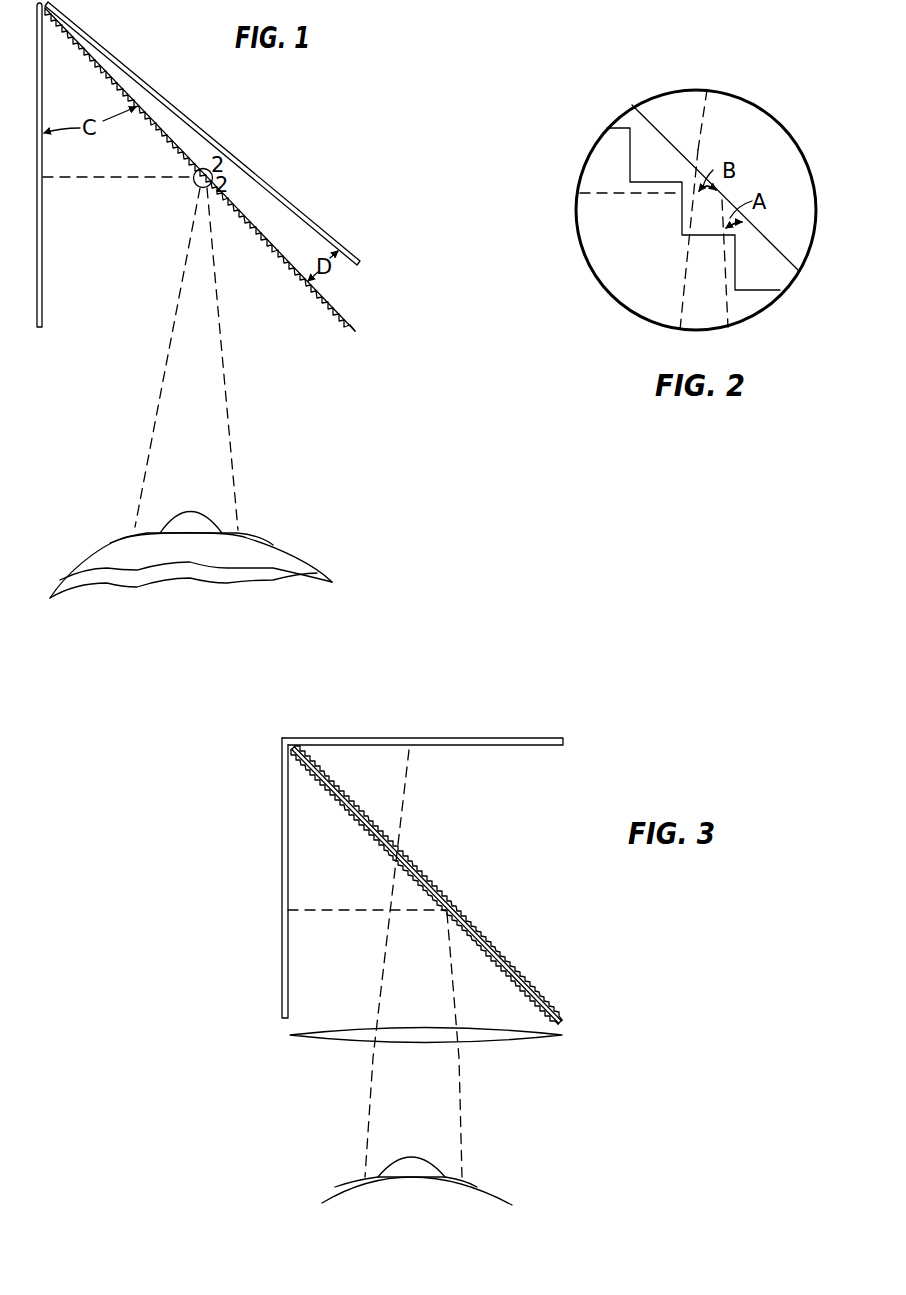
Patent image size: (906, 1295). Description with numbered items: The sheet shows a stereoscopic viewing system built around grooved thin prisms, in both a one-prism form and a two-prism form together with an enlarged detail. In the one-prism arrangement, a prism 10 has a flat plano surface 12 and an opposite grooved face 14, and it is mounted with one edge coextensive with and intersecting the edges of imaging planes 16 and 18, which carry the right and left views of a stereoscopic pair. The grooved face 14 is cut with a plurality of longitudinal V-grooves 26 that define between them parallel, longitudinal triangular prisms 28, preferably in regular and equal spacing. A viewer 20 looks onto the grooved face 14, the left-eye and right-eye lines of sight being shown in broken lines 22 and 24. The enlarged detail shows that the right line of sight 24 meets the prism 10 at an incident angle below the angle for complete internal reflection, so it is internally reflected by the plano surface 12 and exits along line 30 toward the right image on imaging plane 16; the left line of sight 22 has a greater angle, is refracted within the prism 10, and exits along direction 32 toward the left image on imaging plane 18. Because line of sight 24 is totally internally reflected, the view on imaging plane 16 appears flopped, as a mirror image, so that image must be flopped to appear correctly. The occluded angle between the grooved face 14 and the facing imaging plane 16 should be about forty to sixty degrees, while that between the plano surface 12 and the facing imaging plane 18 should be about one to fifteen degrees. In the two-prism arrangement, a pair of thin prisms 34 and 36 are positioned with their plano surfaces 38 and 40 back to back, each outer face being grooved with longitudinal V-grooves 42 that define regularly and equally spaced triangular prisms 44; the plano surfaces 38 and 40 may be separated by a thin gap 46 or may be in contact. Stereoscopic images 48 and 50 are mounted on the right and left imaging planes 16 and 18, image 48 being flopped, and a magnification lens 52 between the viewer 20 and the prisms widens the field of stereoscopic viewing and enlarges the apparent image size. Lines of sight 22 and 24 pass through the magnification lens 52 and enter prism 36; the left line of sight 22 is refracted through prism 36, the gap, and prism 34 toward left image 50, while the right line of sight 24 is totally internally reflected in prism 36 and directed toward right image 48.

In FIG. 1, the prism 10 is at (345, 322).
In FIG. 2, the prism 10 is at (770, 272).
In FIG. 1, the plano surface 12 is at (323, 293).
In FIG. 2, the plano surface 12 is at (655, 124).
In FIG. 1, the grooved face 14 is at (325, 308).
In FIG. 2, the grooved face 14 is at (629, 167).
In FIG. 1, the imaging plane 16 is at (41, 307).
In FIG. 3, the imaging plane 16 is at (282, 940).
In FIG. 1, the imaging plane 18 is at (159, 97).
In FIG. 3, the imaging plane 18 is at (487, 738).
In FIG. 1, the viewer 20 is at (278, 558).
In FIG. 3, the viewer 20 is at (472, 1207).
In FIG. 1, the line of sight 22 is at (157, 420).
In FIG. 2, the line of sight 22 is at (683, 298).
In FIG. 3, the line of sight 22 is at (372, 1087).
In FIG. 1, the line of sight 24 is at (228, 417).
In FIG. 2, the line of sight 24 is at (727, 302).
In FIG. 3, the line of sight 24 is at (460, 1098).
In FIG. 1, the V-grooves 26 is at (265, 242).
In FIG. 2, the V-grooves 26 is at (680, 183).
In FIG. 1, the triangular prisms 28 is at (287, 263).
In FIG. 2, the triangular prisms 28 is at (707, 225).
In FIG. 1, the line 30 is at (95, 178).
In FIG. 2, the line 30 is at (621, 196).
In FIG. 1, the direction 32 is at (213, 170).
In FIG. 2, the direction 32 is at (703, 132).
In FIG. 3, the thin prism 34 is at (561, 1005).
In FIG. 3, the thin prism 36 is at (540, 1000).
In FIG. 3, the plano surface 38 is at (512, 963).
In FIG. 3, the plano surface 40 is at (527, 987).
In FIG. 3, the V-grooves 42 is at (478, 928).
In FIG. 3, the triangular prisms 44 is at (463, 910).
In FIG. 3, the thin gap 46 is at (498, 955).
In FIG. 3, the stereoscopic image 48 is at (288, 973).
In FIG. 3, the stereoscopic image 50 is at (538, 746).
In FIG. 3, the magnification lens 52 is at (535, 1040).